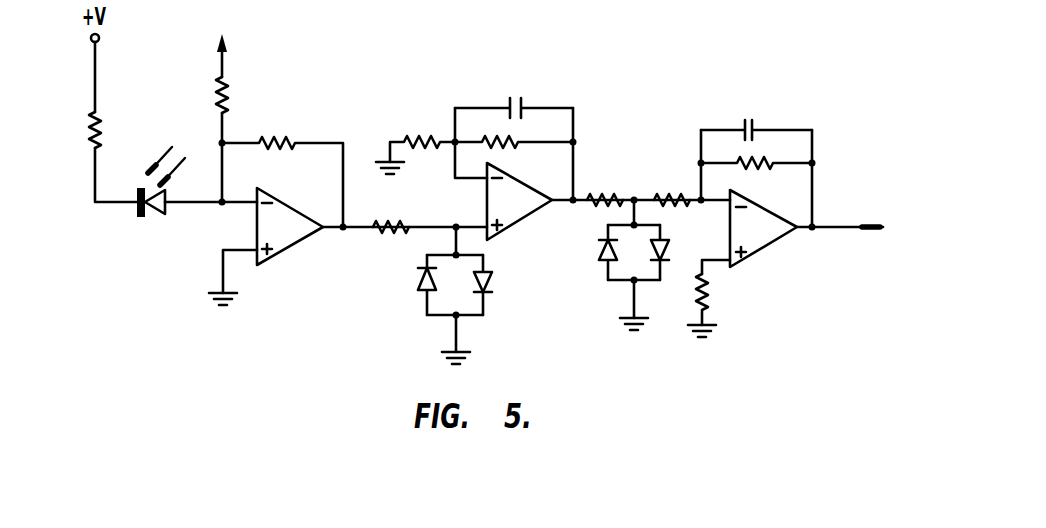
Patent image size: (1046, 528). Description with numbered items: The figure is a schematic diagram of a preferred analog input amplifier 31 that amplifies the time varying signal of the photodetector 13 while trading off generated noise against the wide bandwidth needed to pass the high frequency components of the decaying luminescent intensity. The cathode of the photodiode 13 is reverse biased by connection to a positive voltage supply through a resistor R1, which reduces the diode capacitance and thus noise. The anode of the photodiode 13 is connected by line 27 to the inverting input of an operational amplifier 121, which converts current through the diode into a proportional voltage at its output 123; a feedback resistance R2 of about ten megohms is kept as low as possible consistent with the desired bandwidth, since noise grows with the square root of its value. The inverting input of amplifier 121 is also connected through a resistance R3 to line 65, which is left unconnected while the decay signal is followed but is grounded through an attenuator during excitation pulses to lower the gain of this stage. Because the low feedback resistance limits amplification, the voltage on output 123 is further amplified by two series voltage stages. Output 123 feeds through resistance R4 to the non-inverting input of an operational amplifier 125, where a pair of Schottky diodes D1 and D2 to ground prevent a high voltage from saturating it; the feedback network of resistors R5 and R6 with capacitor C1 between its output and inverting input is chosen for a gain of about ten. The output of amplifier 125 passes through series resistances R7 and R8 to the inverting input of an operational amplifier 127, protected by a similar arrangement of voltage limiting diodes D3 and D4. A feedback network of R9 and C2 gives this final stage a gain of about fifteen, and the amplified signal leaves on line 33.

The photodetector 13 is at (158, 214).
The line 27 is at (190, 203).
The input amplifier 31 is at (322, 299).
The line 33 is at (828, 226).
The line 65 is at (226, 68).
The operational amplifier 121 is at (274, 198).
The output 123 is at (352, 229).
The operational amplifier 125 is at (514, 179).
The operational amplifier 127 is at (762, 208).
The resistor R1 is at (108, 129).
The feedback resistance R2 is at (282, 166).
The resistance R3 is at (234, 95).
The resistance R4 is at (391, 211).
The resistor R5 is at (415, 138).
The resistor R6 is at (514, 125).
The series resistance R7 is at (605, 185).
The series resistance R8 is at (672, 185).
The feedback resistance R9 is at (756, 150).
The capacitor C1 is at (514, 94).
The feedback capacitor C2 is at (756, 115).
The Schottky diode D1 is at (416, 285).
The Schottky diode D2 is at (496, 285).
The voltage limiting diode D3 is at (594, 252).
The voltage limiting diode D4 is at (676, 252).